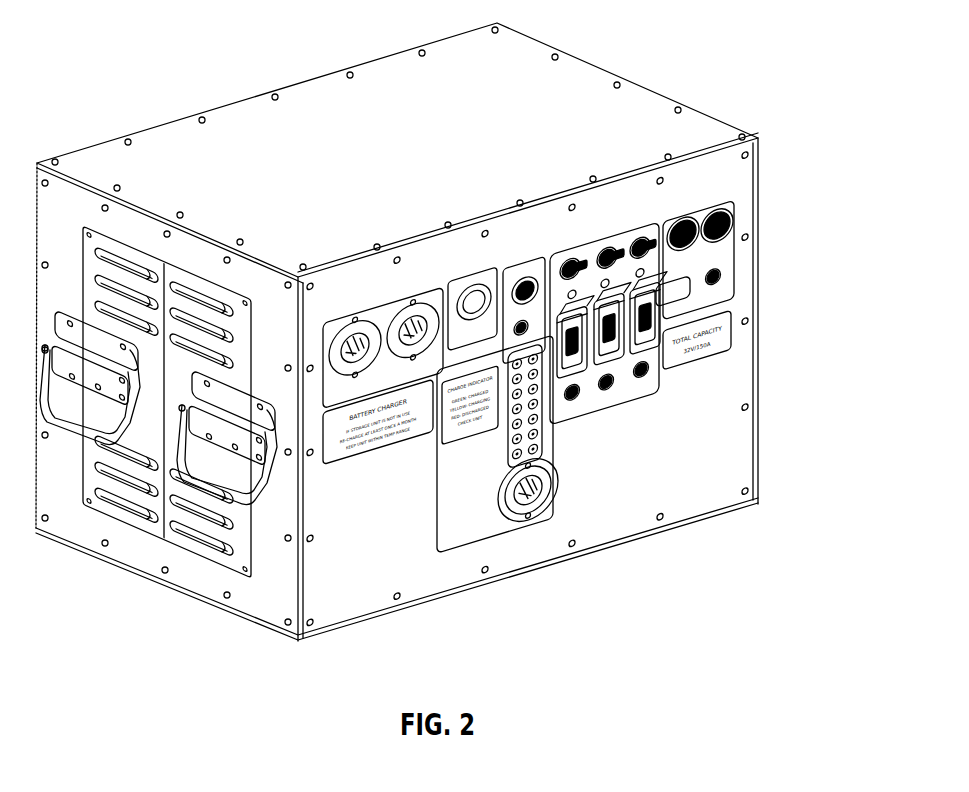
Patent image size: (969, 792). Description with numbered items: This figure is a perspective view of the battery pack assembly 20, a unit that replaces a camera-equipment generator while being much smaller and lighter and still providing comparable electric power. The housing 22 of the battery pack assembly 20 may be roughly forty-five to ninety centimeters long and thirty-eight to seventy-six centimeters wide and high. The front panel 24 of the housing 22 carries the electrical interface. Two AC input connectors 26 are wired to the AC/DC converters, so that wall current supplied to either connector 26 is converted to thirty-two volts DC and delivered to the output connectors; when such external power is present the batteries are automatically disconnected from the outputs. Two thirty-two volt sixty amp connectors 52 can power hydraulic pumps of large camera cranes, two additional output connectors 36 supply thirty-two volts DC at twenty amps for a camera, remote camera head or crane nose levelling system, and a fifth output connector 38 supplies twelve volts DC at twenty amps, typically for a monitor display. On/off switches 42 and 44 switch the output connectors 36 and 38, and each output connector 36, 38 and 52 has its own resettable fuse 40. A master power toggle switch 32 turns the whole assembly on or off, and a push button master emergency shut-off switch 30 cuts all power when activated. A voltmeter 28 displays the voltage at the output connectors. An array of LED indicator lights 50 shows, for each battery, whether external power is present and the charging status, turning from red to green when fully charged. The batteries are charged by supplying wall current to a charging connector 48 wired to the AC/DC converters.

The battery pack assembly 20 is at (770, 157).
The housing 22 is at (636, 98).
The front panel 24 is at (343, 608).
The AC input connector 26 is at (368, 318).
The voltmeter 28 is at (469, 280).
The push button master emergency shut-off switch 30 is at (533, 282).
The master power toggle switch 32 is at (512, 332).
The output connector 36 is at (606, 360).
The fifth output connector 38 is at (672, 328).
The resettable fuse 40 is at (724, 281).
The on/off switch 42 is at (571, 262).
The on/off switch 44 is at (640, 243).
The charging connector 48 is at (521, 518).
The array of LED indicator lights 50 is at (507, 463).
The 32 VDC 60 amp connector 52 is at (728, 232).